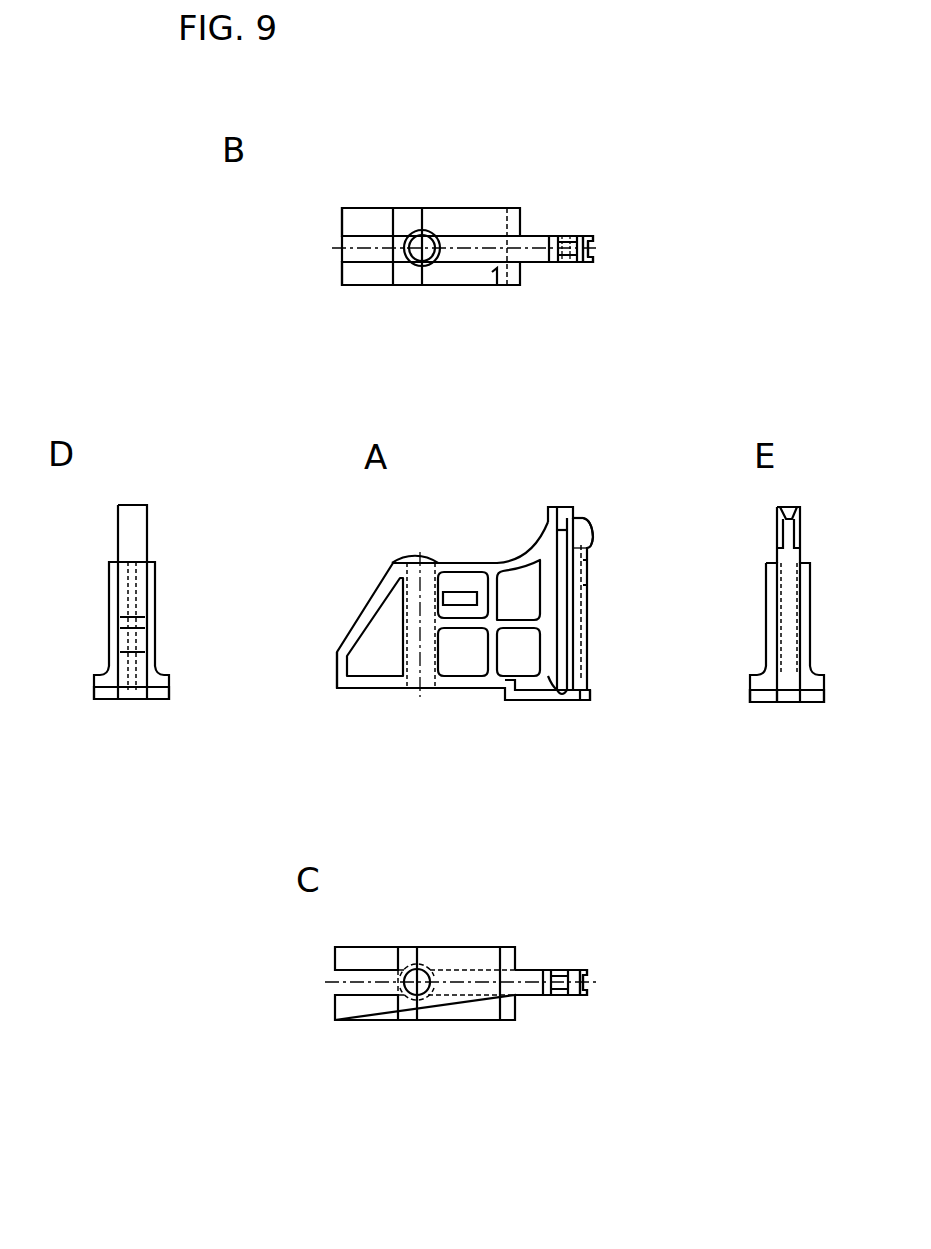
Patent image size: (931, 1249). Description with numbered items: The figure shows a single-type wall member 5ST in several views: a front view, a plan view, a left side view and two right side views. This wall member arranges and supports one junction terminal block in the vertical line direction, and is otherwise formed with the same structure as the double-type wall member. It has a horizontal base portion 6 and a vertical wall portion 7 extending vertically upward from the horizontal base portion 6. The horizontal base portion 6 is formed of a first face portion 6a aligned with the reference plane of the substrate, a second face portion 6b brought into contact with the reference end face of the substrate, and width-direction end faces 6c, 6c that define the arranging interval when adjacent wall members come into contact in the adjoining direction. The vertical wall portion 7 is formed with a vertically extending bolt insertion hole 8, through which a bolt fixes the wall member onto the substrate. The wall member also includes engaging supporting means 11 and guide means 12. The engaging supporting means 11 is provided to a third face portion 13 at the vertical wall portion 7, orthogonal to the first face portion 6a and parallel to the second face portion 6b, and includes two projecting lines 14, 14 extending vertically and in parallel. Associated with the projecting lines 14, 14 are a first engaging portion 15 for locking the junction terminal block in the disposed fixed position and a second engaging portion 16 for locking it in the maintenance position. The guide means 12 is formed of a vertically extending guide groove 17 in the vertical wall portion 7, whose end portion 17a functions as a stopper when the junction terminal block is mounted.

The single-type wall member 5ST is at (336, 211).
The horizontal base portion 6 is at (352, 271).
The first face portion 6a is at (356, 690).
The second face portion 6b is at (492, 272).
The width-direction end faces 6c is at (378, 208).
The vertical wall portion 7 is at (350, 241).
The bolt insertion hole 8 is at (415, 264).
The engaging supporting means 11 is at (620, 236).
The guide means 12 is at (557, 230).
The third face portion 13 is at (600, 250).
The projecting lines 14 is at (593, 238).
The first engaging portion 15 is at (591, 696).
The second engaging portion 16 is at (590, 552).
The guide groove 17 is at (564, 263).
The end portion 17a is at (555, 690).